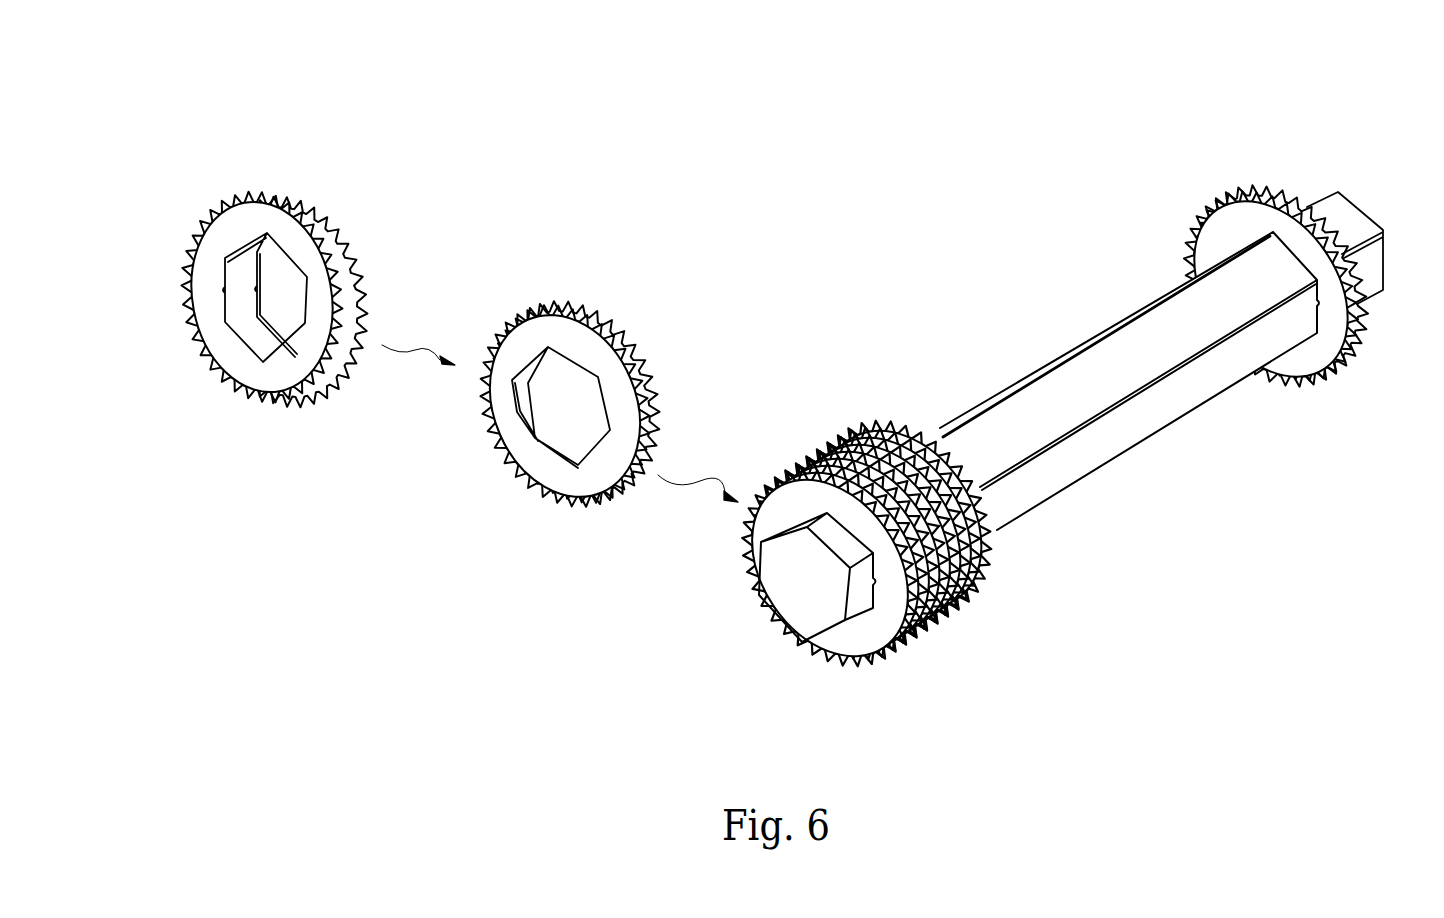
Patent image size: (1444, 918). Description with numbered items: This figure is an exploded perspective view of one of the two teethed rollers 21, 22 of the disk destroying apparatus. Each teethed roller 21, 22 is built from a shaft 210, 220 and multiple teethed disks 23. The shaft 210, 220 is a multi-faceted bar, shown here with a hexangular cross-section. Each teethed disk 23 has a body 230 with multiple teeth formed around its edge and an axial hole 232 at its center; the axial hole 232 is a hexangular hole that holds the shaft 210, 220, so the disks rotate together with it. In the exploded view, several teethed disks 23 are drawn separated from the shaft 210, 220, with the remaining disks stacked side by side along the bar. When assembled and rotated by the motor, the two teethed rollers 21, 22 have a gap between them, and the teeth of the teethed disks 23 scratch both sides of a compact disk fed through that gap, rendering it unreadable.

The teethed roller 21 is at (759, 369).
The teethed roller 22 is at (759, 369).
The teethed disk 23 is at (564, 401).
The body 230 is at (243, 220).
The axial hole 232 is at (245, 318).
The shaft 210 is at (1283, 262).
The shaft 220 is at (1350, 223).